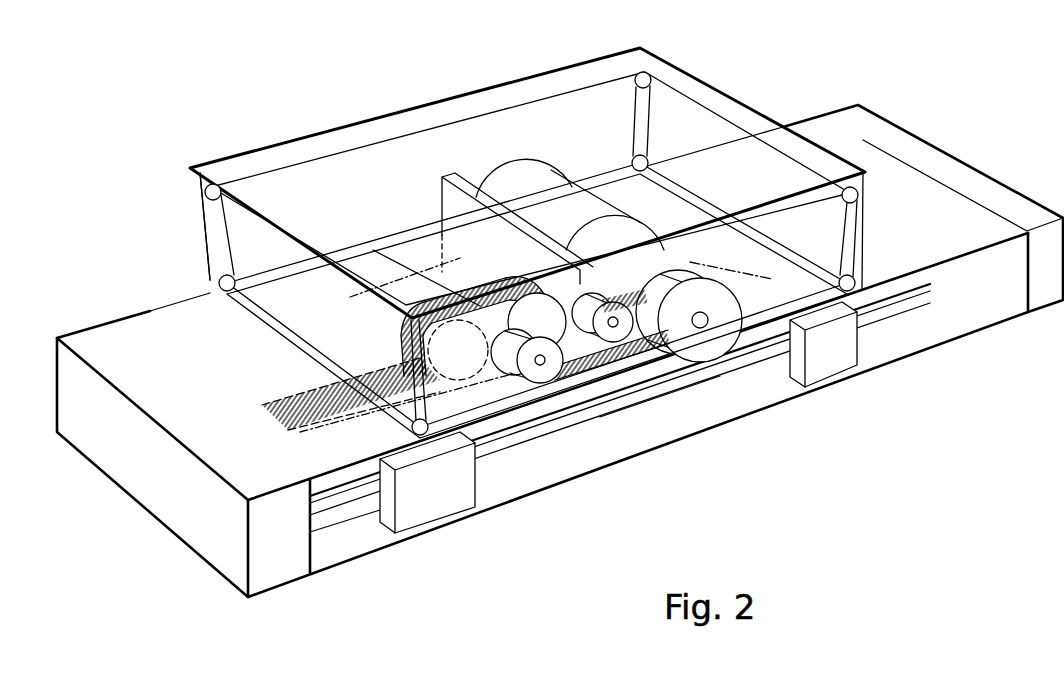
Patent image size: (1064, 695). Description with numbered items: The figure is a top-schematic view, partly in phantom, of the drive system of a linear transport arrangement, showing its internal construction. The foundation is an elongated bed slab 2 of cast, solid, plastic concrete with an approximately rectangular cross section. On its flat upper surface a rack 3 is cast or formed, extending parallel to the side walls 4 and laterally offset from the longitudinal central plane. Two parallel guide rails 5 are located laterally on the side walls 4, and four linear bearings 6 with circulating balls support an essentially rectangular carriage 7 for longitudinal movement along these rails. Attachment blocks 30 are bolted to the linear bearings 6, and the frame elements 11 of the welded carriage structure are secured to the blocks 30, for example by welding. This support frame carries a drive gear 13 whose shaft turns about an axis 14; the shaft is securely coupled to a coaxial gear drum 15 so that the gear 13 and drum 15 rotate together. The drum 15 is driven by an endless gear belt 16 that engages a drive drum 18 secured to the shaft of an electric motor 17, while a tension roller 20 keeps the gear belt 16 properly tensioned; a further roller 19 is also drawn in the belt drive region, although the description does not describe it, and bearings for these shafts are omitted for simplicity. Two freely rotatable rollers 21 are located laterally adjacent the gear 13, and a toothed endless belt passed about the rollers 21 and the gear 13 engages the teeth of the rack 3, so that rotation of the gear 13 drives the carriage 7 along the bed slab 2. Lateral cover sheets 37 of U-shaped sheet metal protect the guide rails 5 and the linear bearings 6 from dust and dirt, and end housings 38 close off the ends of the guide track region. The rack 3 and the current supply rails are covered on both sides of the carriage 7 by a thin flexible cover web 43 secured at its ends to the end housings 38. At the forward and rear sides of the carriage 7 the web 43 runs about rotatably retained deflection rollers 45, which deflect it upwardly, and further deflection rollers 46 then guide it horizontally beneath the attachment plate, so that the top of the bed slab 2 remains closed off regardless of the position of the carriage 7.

The bed slab 2 is at (547, 495).
The rack 3 is at (300, 400).
The side walls 4 is at (655, 428).
The guide rails 5 is at (723, 382).
The linear bearings 6 is at (370, 523).
The carriage 7 is at (186, 204).
The frame element 11 is at (470, 431).
The drive gear 13 is at (460, 292).
The axis 14 is at (373, 250).
The gear drum 15 is at (540, 360).
The gear belt 16 is at (593, 363).
The electric motor 17 is at (537, 173).
The drive drum 18 is at (710, 293).
The roller 19 is at (575, 285).
The tension roller 20 is at (617, 318).
The freely rotatable roller 21 is at (493, 272).
The attachment blocks 30 is at (447, 503).
The cover sheets 37 is at (1037, 293).
The end housings 38 is at (285, 570).
The cover web 43 is at (233, 228).
The deflection rollers 45 is at (245, 295).
The deflection rollers 46 is at (330, 287).